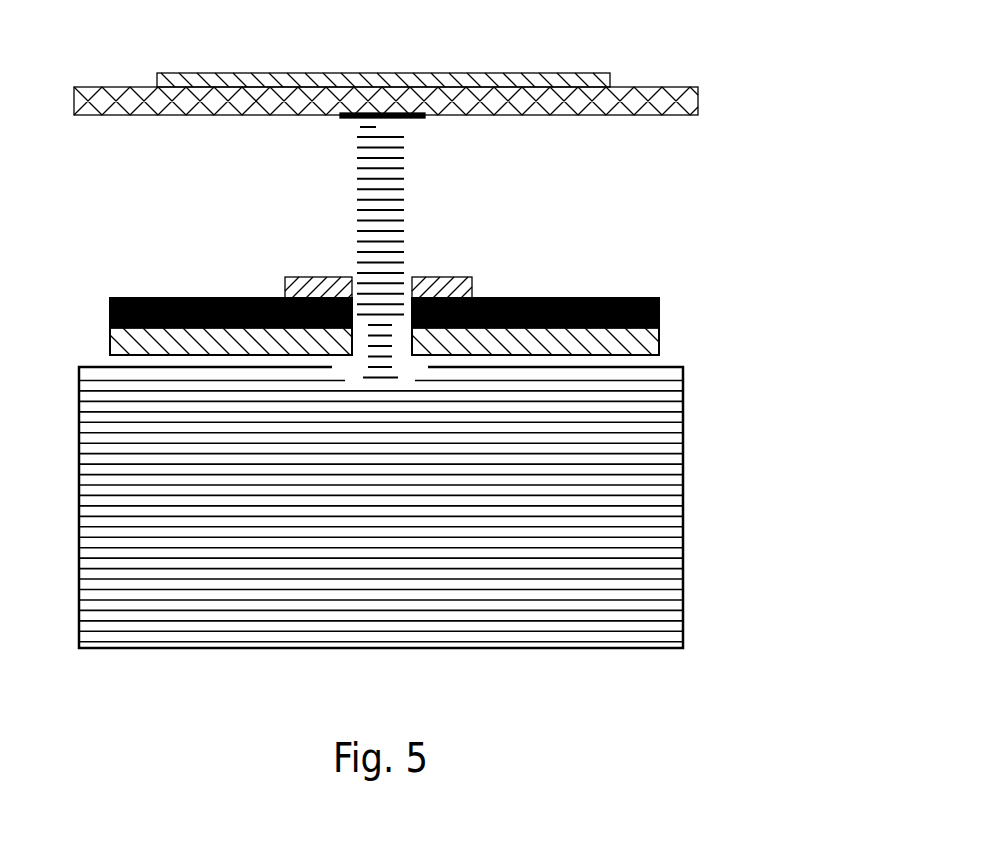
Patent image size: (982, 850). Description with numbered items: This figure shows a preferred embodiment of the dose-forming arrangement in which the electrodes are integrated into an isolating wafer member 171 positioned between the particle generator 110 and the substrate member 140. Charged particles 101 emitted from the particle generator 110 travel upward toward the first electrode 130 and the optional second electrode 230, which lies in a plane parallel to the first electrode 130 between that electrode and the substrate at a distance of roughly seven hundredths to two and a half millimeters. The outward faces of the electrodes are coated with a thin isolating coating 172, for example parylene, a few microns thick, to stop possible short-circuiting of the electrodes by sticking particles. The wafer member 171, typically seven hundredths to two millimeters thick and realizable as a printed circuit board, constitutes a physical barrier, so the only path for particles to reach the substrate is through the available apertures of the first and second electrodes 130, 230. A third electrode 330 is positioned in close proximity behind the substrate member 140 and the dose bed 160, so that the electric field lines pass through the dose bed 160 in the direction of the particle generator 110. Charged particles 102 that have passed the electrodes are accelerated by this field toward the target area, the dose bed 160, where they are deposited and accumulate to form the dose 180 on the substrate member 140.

The third electrode 330 is at (612, 75).
The substrate member 140 is at (700, 106).
The dose bed 160 is at (345, 117).
The dose 180 is at (358, 125).
The charged particles 102 is at (388, 194).
The second electrode 230 is at (473, 282).
The isolating coating 172 is at (640, 296).
The isolating wafer member 171 is at (660, 318).
The first electrode 130 is at (650, 342).
The charged particles 101 is at (620, 443).
The particle generator 110 is at (683, 560).